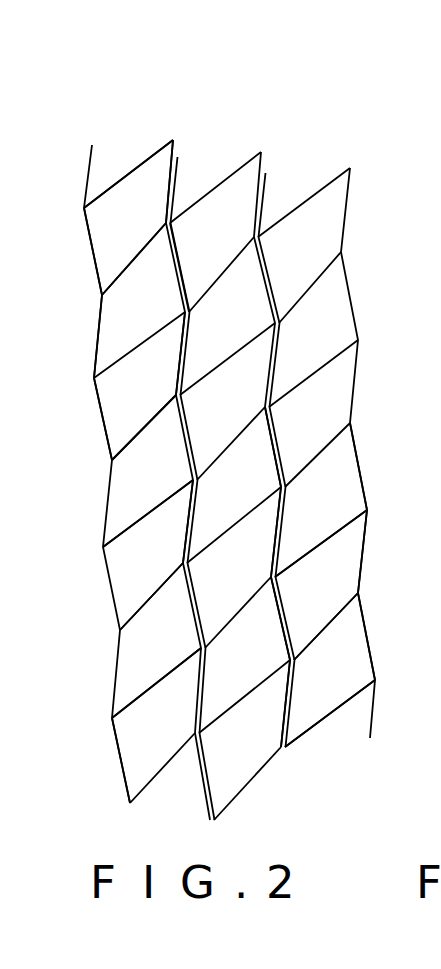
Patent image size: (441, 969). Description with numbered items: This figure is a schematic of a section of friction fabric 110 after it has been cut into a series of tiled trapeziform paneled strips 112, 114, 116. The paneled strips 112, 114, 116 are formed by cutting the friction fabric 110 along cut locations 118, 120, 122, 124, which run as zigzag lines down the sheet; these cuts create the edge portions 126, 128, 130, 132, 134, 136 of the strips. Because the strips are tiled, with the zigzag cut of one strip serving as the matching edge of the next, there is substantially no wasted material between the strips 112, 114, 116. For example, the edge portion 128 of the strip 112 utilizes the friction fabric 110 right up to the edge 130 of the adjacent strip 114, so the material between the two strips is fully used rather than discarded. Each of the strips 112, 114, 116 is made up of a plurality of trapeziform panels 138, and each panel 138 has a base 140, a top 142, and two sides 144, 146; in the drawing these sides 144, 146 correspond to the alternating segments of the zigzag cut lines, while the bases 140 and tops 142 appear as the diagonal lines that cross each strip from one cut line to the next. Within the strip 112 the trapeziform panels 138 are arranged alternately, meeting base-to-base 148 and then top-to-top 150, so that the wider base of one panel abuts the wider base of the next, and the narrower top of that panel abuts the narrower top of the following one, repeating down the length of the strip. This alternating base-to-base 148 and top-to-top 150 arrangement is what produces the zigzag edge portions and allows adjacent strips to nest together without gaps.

The friction fabric 110 is at (122, 778).
The paneled strip 112 is at (174, 777).
The paneled strip 114 is at (266, 787).
The paneled strip 116 is at (340, 737).
The cut location 118 is at (101, 132).
The cut location 120 is at (186, 131).
The cut location 122 is at (273, 149).
The cut location 124 is at (361, 162).
The edge portion 126 is at (107, 437).
The edge portion 128 is at (178, 378).
The edge portion 130 is at (193, 507).
The edge portion 132 is at (285, 480).
The edge portion 134 is at (287, 508).
The edge portion 136 is at (353, 443).
The trapeziform panel 138 is at (142, 487).
The base 140 is at (110, 187).
The top 142 is at (150, 237).
The side 144 is at (88, 228).
The side 146 is at (170, 190).
The base-to-base arrangement 148 is at (153, 686).
The top-to-top arrangement 150 is at (153, 593).